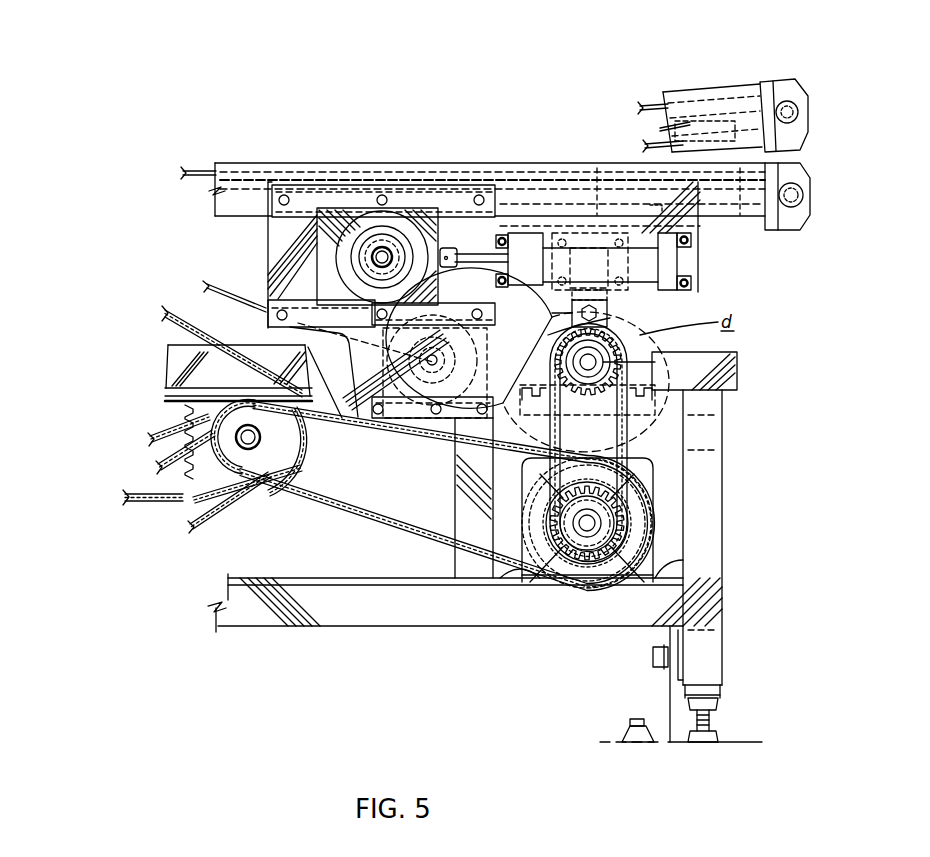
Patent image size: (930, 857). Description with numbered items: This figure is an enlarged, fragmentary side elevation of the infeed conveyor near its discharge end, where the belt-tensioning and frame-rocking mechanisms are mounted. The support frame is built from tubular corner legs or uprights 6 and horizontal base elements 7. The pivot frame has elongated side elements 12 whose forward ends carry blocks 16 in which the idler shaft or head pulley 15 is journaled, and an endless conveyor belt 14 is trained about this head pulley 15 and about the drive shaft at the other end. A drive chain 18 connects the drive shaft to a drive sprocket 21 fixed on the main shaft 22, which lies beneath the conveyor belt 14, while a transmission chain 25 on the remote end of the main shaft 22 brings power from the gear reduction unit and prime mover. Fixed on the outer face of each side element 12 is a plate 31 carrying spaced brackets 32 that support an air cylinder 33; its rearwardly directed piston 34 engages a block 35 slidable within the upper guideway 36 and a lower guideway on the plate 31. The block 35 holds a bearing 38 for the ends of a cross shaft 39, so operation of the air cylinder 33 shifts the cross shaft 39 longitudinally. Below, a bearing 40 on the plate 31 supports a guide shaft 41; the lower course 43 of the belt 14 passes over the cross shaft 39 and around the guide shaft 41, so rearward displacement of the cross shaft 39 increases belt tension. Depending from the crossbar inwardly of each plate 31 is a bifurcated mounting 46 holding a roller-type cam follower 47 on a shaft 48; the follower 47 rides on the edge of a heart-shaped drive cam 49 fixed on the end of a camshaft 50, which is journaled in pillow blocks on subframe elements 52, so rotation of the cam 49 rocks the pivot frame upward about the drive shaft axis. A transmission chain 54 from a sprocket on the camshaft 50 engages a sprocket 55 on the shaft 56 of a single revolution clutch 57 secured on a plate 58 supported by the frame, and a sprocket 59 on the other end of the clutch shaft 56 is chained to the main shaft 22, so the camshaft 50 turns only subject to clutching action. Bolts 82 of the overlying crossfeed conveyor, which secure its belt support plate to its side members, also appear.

The corner legs or uprights 6 is at (718, 578).
The horizontal base elements 7 is at (383, 622).
The side elements 12 is at (218, 165).
The endless conveyor belt 14 is at (195, 172).
The idler shaft or head pulley 15 is at (788, 102).
The blocks 16 is at (770, 86).
The drive chain 18 is at (232, 352).
The drive sprocket 21 is at (185, 478).
The main shaft 22 is at (244, 436).
The transmission chain 25 is at (158, 465).
The plate 31 is at (280, 186).
The brackets 32 is at (506, 248).
The air cylinder 33 is at (562, 240).
The piston 34 is at (470, 245).
The block 35 is at (325, 210).
The upper guideway 36 is at (298, 188).
The bearing 38 is at (382, 250).
The cross shaft 39 is at (378, 255).
The bearing 40 is at (430, 365).
The guide shaft 41 is at (437, 362).
The lower course 43 is at (465, 248).
The bifurcated mounting 46 is at (628, 303).
The roller-type cam follower 47 is at (598, 318).
The shaft 48 is at (612, 318).
The drive cam 49 is at (665, 343).
The camshaft 50 is at (600, 362).
The subframe elements 52 is at (480, 582).
The transmission chain 54 is at (625, 433).
The sprocket 55 is at (602, 522).
The shaft 56 is at (650, 532).
The single revolution clutch 57 is at (645, 460).
The plate 58 is at (520, 588).
The sprocket 59 is at (630, 495).
The bolts 82 is at (150, 438).